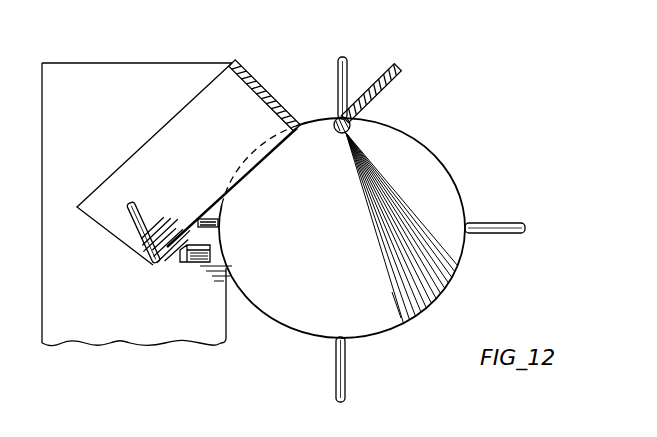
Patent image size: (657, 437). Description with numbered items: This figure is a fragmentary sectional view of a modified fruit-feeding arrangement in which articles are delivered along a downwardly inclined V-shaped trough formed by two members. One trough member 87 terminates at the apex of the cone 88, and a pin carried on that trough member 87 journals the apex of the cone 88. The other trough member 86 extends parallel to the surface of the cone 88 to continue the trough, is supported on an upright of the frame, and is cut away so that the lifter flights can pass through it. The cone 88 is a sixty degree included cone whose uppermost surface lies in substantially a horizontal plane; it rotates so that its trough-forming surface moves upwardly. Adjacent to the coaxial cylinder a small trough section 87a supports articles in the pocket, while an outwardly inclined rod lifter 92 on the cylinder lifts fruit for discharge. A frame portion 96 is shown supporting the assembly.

The support frame 96 is at (113, 77).
The trough member 86 is at (176, 125).
The trough member 87 is at (387, 91).
The small trough section 87a is at (197, 262).
The cone 88 is at (423, 162).
The rod lifter 92 is at (501, 222).